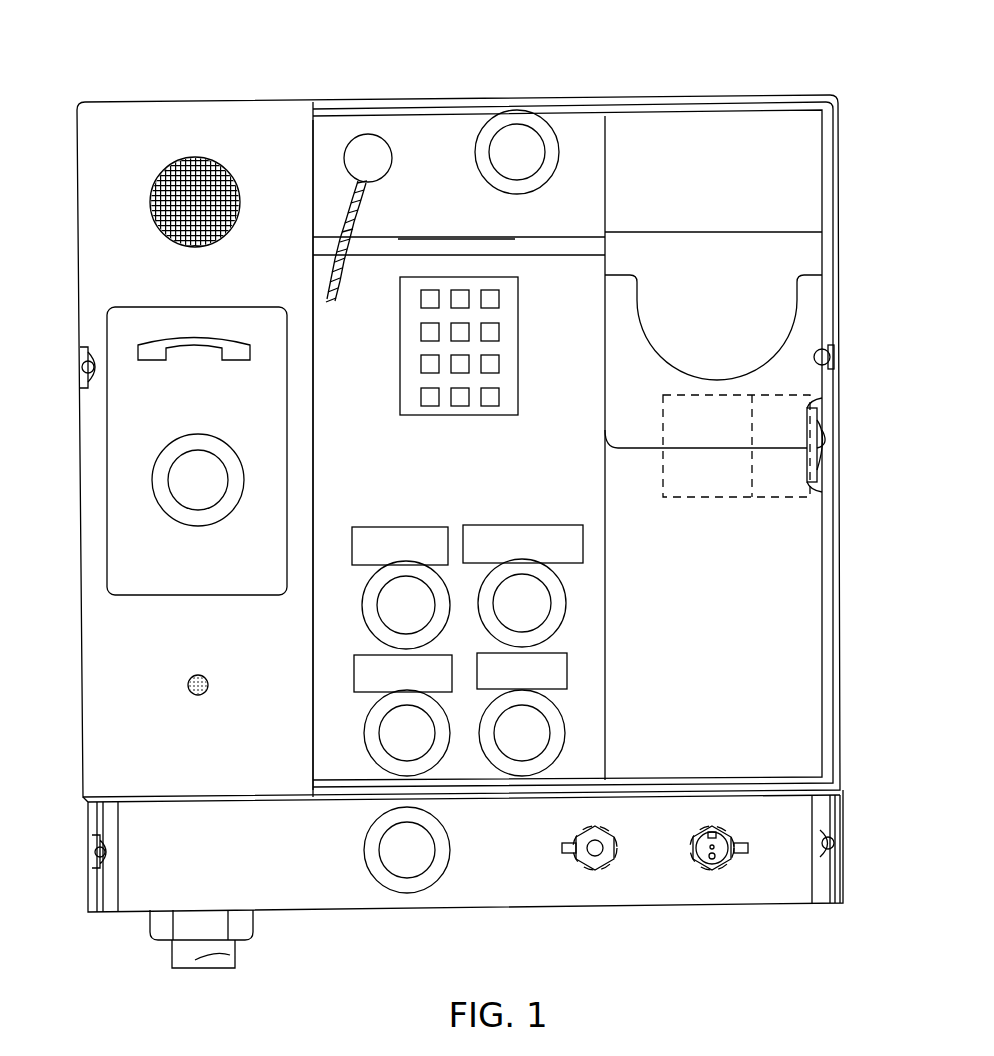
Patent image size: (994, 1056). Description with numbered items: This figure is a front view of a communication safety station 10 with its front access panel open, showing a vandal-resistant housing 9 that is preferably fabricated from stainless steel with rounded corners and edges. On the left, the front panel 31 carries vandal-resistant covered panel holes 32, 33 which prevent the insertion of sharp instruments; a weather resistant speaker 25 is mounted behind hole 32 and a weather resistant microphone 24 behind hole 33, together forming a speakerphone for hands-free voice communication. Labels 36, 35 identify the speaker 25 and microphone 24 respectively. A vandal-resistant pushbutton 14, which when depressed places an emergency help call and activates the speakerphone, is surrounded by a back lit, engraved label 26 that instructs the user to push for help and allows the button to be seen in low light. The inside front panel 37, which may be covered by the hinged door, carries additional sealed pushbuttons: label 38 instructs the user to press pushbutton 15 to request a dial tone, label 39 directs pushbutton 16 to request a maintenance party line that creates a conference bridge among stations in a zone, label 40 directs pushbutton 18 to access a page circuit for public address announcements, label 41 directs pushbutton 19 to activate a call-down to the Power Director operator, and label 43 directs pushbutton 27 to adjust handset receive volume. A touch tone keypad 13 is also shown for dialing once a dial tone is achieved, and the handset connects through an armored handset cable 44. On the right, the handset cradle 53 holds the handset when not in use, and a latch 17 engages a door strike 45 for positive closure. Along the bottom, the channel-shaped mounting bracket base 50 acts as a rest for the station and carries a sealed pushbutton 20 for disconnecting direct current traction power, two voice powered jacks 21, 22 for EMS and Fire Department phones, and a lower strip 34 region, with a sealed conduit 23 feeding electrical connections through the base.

The housing 9 is at (350, 108).
The safety station 10 is at (85, 102).
The keypad 13 is at (400, 361).
The pushbutton 14 is at (158, 467).
The pushbutton 15 is at (362, 605).
The pushbutton 16 is at (566, 600).
The latch 17 is at (792, 487).
The pushbutton 18 is at (565, 730).
The pushbutton 19 is at (375, 727).
The pushbutton 20 is at (382, 866).
The voice powered jack 21 is at (606, 866).
The voice powered jack 22 is at (730, 868).
The conduit 23 is at (177, 958).
The microphone 24 is at (187, 679).
The speaker 25 is at (140, 212).
The label 26 is at (107, 318).
The pushbutton 27 is at (497, 146).
The front panel 31 is at (120, 182).
The covered panel hole 32 is at (183, 170).
The covered panel hole 33 is at (210, 678).
The bottom connector strip 34 is at (790, 813).
The label 35 is at (115, 716).
The label 36 is at (120, 270).
The inside front panel 37 is at (781, 567).
The label 38 is at (408, 527).
The label 39 is at (536, 525).
The label 40 is at (567, 663).
The label 41 is at (354, 662).
The label 43 is at (575, 190).
The armored handset cable 44 is at (340, 208).
The door strike 45 is at (822, 430).
The mounting bracket base 50 is at (155, 867).
The handset cradle 53 is at (818, 291).